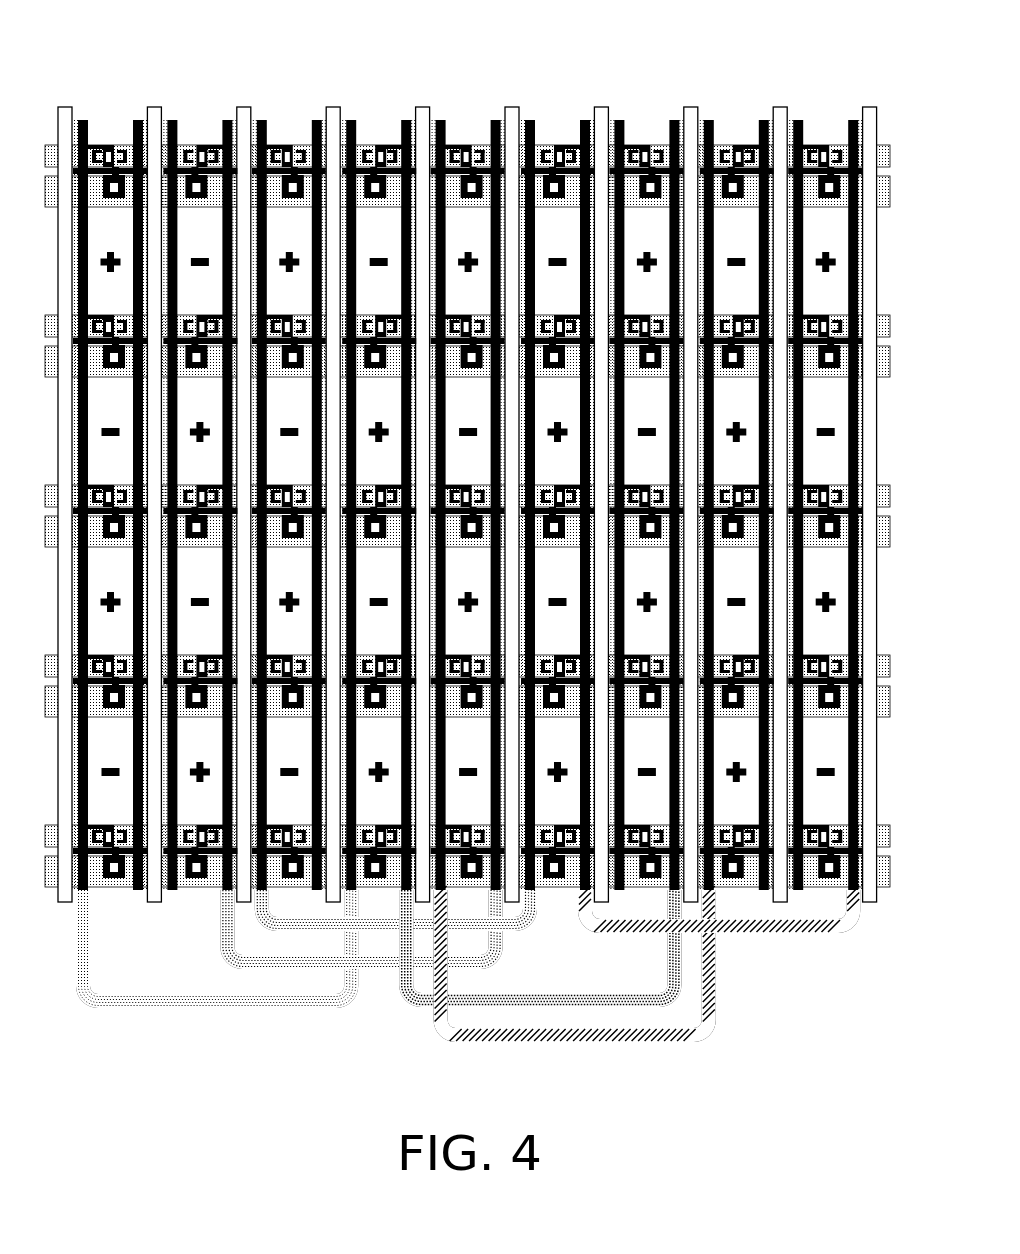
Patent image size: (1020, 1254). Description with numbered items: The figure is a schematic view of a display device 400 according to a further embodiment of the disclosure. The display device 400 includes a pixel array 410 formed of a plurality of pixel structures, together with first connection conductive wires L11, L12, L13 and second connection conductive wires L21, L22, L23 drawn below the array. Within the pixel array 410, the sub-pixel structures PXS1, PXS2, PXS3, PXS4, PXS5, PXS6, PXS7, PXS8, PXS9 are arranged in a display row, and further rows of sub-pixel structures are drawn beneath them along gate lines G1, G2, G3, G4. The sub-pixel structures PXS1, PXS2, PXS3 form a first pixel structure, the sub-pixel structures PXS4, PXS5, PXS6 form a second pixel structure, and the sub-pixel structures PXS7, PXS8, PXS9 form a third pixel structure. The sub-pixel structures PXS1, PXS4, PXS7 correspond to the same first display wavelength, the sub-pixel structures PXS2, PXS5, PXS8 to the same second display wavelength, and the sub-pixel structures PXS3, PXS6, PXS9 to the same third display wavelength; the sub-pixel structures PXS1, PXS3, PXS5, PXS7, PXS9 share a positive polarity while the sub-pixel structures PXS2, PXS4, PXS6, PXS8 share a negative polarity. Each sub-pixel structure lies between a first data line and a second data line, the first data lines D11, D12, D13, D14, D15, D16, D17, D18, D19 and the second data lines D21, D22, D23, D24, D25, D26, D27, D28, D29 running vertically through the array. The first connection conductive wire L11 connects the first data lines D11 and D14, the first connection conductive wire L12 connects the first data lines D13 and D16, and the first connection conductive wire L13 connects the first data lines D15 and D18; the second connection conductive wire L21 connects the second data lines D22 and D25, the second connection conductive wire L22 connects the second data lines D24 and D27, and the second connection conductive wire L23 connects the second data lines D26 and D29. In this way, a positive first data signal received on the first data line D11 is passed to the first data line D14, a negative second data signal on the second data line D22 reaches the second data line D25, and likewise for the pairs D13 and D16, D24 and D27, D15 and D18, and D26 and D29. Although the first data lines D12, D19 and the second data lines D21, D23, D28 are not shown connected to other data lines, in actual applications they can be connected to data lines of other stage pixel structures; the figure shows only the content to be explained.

The display device 400 is at (857, 1056).
The pixel array 410 is at (893, 255).
The first gate line G1 is at (454, 176).
The second gate line G2 is at (454, 346).
The third gate line G3 is at (454, 516).
The fourth gate line G4 is at (454, 686).
The first data line D11 is at (90, 133).
The first data line D12 is at (173, 120).
The first data line D13 is at (268, 133).
The first data line D14 is at (352, 118).
The first data line D15 is at (447, 128).
The first data line D16 is at (531, 120).
The data line D17 is at (619, 120).
The first data line D18 is at (708, 120).
The first data line D19 is at (798, 120).
The second data line D21 is at (138, 120).
The second data line D22 is at (222, 128).
The second data line D23 is at (317, 120).
The second data line D24 is at (400, 128).
The second data line D25 is at (496, 120).
The second data line D26 is at (580, 128).
The second data line D27 is at (673, 120).
The second data line D28 is at (762, 120).
The second data line D29 is at (853, 120).
The sub-pixel structure PXS1 is at (110, 511).
The sub-pixel structure PXS2 is at (200, 511).
The sub-pixel structure PXS3 is at (289, 511).
The sub-pixel structure PXS4 is at (379, 511).
The sub-pixel structure PXS5 is at (468, 511).
The sub-pixel structure PXS6 is at (558, 511).
The sub-pixel structure PXS7 is at (646, 511).
The sub-pixel structure PXS8 is at (737, 511).
The sub-pixel structure PXS9 is at (825, 511).
The first connection conductive wire L11 is at (177, 1008).
The first connection conductive wire L12 is at (383, 931).
The first connection conductive wire L13 is at (460, 1043).
The second connection conductive wire L21 is at (297, 970).
The second connection conductive wire L22 is at (422, 1006).
The second connection conductive wire L23 is at (858, 920).